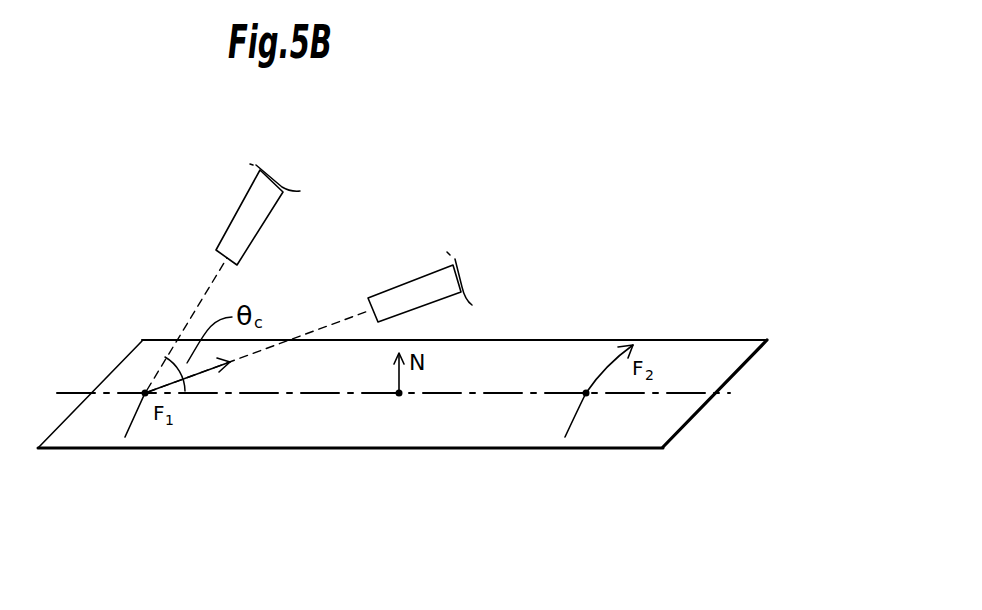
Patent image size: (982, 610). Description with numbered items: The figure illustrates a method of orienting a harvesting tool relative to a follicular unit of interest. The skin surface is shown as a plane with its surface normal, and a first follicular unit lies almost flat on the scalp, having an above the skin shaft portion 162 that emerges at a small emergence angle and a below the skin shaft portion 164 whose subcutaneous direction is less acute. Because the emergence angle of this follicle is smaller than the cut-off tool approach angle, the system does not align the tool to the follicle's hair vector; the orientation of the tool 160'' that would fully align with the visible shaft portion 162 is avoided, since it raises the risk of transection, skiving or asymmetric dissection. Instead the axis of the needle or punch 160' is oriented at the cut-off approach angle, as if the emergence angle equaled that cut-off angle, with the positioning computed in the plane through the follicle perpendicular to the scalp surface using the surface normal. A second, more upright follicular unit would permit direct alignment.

The tool 160' is at (419, 272).
The tool 160'' is at (231, 214).
The above the skin shaft portion 162 is at (164, 380).
The below the skin shaft portion 164 is at (133, 412).